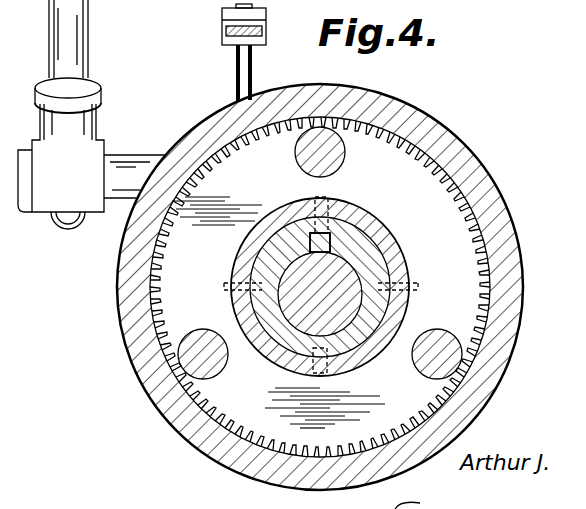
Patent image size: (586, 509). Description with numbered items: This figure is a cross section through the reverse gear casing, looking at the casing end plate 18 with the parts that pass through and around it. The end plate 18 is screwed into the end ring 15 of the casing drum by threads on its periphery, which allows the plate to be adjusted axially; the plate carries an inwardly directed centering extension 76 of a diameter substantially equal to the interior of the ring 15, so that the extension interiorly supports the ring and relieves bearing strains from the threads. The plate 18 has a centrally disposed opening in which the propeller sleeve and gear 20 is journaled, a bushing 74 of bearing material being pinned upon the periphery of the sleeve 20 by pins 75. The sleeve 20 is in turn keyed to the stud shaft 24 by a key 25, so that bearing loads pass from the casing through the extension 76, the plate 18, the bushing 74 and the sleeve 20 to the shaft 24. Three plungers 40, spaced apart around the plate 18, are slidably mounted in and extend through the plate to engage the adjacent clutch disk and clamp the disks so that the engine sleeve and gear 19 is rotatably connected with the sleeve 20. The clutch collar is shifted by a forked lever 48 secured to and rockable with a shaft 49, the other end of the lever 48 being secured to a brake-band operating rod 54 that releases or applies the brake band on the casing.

The end ring 15 is at (462, 147).
The casing end plate 18 is at (430, 214).
The engine sleeve and gear 19 is at (70, 37).
The propeller sleeve and gear 20 is at (372, 254).
The stud shaft 24 is at (340, 297).
The key 25 is at (324, 233).
The plungers 40 is at (313, 157).
The forked lever 48 is at (236, 80).
The shaft 49 is at (137, 168).
The brake-band operating rod 54 is at (222, 40).
The bushing 74 is at (368, 220).
The pins 75 is at (405, 281).
The centering extension 76 is at (418, 145).